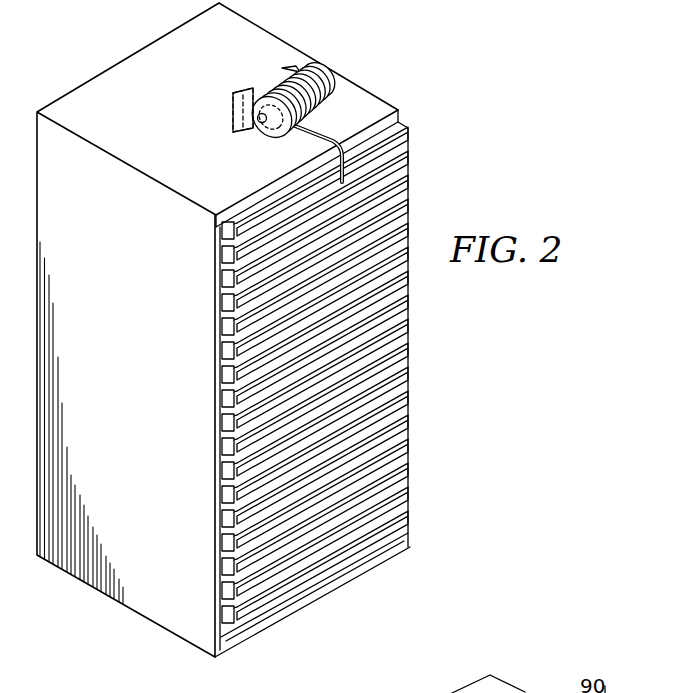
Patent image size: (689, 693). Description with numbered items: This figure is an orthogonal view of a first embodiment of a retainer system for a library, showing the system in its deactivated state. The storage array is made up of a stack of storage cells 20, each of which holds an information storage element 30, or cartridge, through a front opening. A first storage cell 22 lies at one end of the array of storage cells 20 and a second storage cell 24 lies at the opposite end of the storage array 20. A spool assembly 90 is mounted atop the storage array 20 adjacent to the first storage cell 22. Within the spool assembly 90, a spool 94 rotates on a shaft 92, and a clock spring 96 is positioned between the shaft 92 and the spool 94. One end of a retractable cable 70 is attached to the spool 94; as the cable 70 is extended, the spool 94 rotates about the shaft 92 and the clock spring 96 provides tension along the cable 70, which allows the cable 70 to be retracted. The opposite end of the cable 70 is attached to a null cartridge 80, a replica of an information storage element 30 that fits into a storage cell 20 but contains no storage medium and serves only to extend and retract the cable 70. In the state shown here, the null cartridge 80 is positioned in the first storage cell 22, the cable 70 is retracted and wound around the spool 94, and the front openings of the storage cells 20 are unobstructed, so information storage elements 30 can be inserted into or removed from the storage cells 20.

The storage cells 20 is at (147, 605).
The first storage cell 22 is at (243, 204).
The second storage cell 24 is at (228, 637).
The information storage elements 30 is at (403, 358).
The retractable cable 70 is at (317, 124).
The null cartridge 80 is at (407, 140).
The spool assembly 90 is at (266, 92).
The shaft 92 is at (259, 123).
The spool 94 is at (255, 98).
The clock spring 96 is at (232, 100).